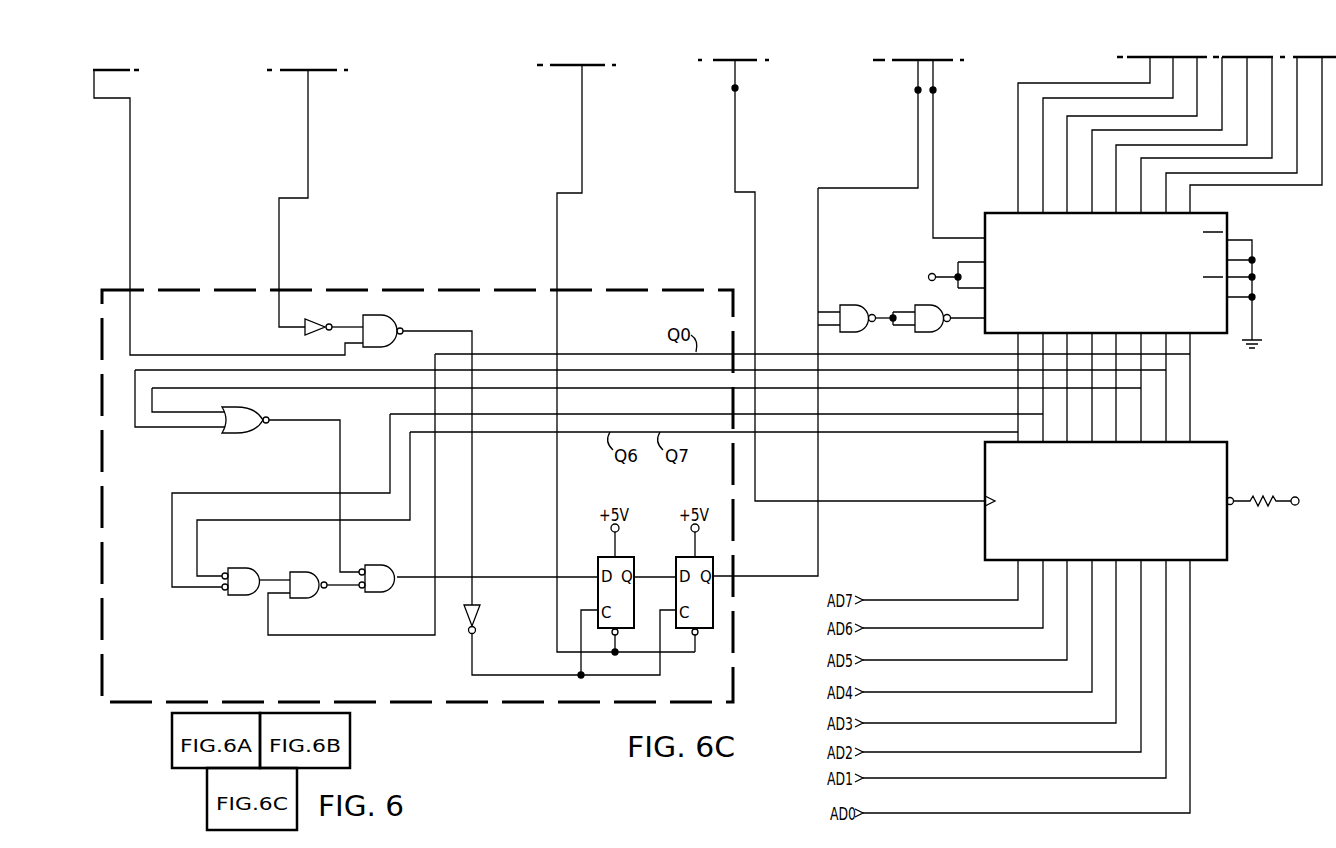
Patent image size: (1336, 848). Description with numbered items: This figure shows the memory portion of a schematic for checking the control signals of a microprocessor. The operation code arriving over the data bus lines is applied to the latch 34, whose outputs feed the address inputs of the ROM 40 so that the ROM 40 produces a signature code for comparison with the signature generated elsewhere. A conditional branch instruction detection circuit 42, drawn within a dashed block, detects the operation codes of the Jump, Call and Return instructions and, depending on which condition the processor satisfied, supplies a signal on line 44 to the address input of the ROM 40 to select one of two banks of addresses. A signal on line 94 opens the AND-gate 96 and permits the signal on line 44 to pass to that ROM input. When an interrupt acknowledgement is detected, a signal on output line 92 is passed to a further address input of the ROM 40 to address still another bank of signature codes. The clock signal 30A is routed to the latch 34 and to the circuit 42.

The clock signal line 30A is at (733, 90).
The latch 34 is at (1228, 447).
The ROM 40 is at (1228, 218).
The conditional branch instruction detection circuit 42 is at (698, 290).
The line 44 is at (820, 548).
The output line 92 is at (935, 90).
The line 94 is at (916, 90).
The AND-gate 96 is at (855, 310).